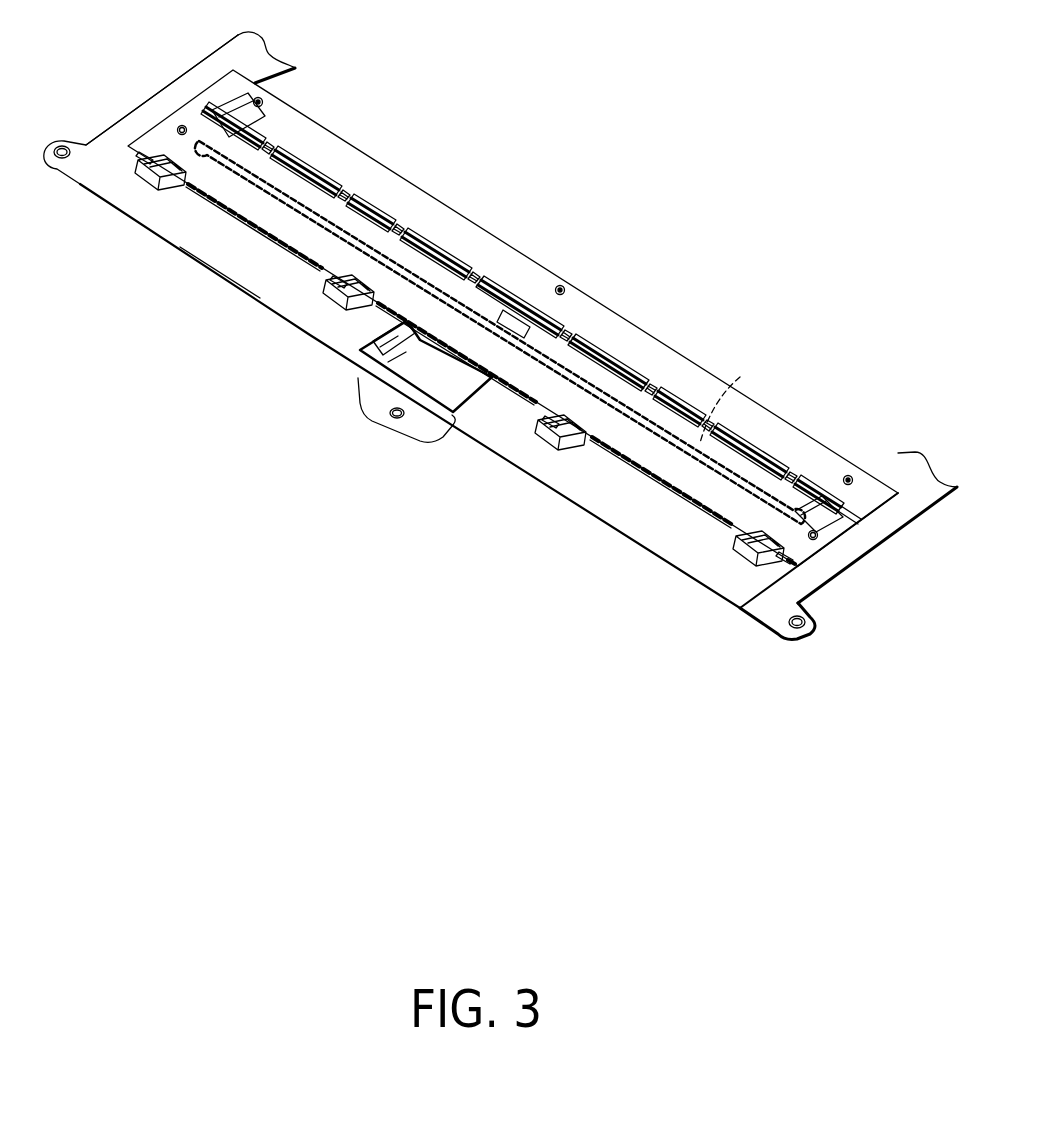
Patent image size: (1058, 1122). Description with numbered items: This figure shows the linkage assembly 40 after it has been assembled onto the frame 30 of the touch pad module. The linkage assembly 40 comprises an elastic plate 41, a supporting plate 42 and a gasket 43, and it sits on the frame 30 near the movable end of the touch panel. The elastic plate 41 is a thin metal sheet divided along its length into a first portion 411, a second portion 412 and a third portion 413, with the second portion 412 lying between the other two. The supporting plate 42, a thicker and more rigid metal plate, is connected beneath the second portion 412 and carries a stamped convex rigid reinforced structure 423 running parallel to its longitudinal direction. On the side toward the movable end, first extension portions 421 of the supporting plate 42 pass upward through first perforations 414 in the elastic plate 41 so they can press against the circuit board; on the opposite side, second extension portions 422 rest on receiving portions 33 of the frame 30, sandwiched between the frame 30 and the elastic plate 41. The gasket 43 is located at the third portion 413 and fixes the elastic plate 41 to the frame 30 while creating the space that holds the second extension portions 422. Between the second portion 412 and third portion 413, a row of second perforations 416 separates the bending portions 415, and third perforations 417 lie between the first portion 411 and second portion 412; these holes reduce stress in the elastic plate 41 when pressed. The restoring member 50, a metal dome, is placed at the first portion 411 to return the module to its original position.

The frame 30 is at (236, 36).
The linkage assembly 40 is at (188, 98).
The elastic plate 41 is at (612, 312).
The first portion 411 is at (220, 257).
The second portion 412 is at (162, 138).
The third portion 413 is at (793, 437).
The first perforation 414 is at (150, 172).
The bending portion 415 is at (345, 193).
The second perforation 416 is at (303, 147).
The third perforation 417 is at (707, 520).
The first extension portion 421 is at (150, 163).
The second extension portion 422 is at (282, 67).
The rigid reinforced structure 423 is at (745, 379).
The receiving portion 33 is at (232, 128).
The supporting plate 42 is at (835, 555).
The gasket 43 is at (883, 508).
The restoring member 50 is at (390, 357).